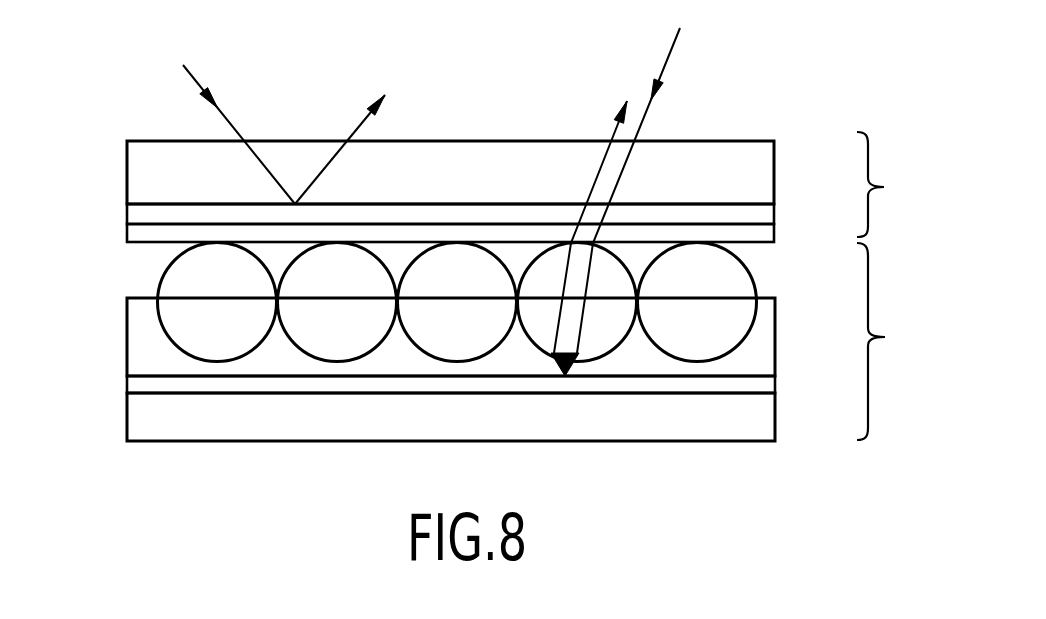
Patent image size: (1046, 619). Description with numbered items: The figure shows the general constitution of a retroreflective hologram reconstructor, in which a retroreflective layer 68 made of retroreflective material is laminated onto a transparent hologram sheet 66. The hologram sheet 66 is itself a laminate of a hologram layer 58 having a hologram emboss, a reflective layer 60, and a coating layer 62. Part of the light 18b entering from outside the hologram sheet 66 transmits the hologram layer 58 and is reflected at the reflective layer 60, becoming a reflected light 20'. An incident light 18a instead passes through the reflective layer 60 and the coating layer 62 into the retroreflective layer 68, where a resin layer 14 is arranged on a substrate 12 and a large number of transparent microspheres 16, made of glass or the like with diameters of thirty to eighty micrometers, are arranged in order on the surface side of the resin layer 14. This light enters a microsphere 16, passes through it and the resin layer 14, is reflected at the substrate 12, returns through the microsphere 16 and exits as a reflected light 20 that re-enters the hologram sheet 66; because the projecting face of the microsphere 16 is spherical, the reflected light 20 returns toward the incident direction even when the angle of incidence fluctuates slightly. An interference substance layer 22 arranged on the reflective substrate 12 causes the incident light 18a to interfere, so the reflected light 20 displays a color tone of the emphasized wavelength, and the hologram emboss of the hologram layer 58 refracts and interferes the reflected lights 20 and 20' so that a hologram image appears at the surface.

The substrate 12 is at (128, 418).
The resin layer 14 is at (127, 332).
The transparent microsphere 16 is at (740, 280).
The incident light 18a is at (667, 63).
The light 18b is at (200, 80).
The reflected light 20 is at (580, 218).
The reflected light 20' is at (340, 132).
The interference substance layer 22 is at (770, 383).
The hologram layer 58 is at (760, 180).
The reflective layer 60 is at (125, 218).
The coating layer 62 is at (128, 235).
The transparent hologram sheet 66 is at (930, 201).
The retroreflective layer 68 is at (930, 351).